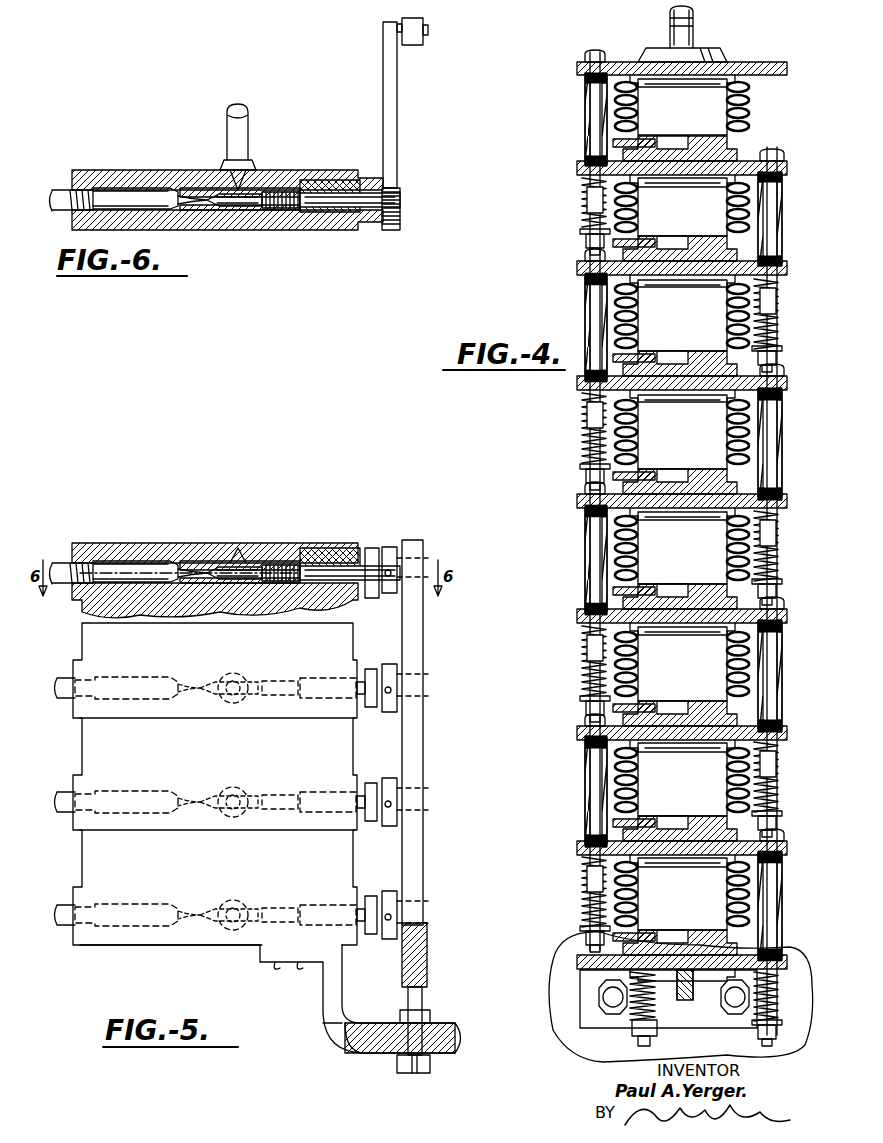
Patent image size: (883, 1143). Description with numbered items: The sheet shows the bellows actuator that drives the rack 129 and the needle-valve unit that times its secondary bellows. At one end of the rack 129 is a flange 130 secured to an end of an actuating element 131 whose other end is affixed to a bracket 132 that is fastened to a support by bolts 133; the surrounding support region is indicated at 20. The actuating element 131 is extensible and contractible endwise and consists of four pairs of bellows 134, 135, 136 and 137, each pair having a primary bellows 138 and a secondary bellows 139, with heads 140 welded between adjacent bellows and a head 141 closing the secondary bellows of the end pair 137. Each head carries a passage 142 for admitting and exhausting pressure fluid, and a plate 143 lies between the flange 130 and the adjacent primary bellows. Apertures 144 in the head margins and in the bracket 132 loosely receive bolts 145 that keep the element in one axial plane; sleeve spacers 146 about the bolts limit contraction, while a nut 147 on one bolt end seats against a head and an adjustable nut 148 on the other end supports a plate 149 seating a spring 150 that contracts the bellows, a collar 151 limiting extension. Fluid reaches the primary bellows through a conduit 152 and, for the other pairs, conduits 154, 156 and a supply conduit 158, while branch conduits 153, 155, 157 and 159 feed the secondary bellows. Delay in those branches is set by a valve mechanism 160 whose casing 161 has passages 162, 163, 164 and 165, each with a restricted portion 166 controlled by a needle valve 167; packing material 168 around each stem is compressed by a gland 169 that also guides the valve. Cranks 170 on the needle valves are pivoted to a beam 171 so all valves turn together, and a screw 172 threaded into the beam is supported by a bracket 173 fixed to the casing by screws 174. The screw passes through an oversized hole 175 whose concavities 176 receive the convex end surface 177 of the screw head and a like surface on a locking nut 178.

In FIG. 4, the base housing 20 is at (560, 1040).
In FIG. 4, the rack 129 is at (694, 22).
In FIG. 4, the flange 130 is at (650, 52).
In FIG. 4, the actuating element 131 is at (782, 415).
In FIG. 4, the bracket 132 is at (580, 1010).
In FIG. 4, the bolts 133 is at (612, 1000).
In FIG. 4, the pair of bellows 134 is at (577, 167).
In FIG. 4, the pair of bellows 135 is at (578, 385).
In FIG. 4, the pair of bellows 136 is at (578, 615).
In FIG. 4, the pair of bellows 137 is at (578, 848).
In FIG. 4, the primary bellows 138 is at (750, 110).
In FIG. 4, the secondary bellows 139 is at (745, 205).
In FIG. 4, the heads 140 is at (740, 150).
In FIG. 4, the head 141 is at (698, 930).
In FIG. 4, the passage 142 is at (685, 135).
In FIG. 4, the plate 143 is at (760, 62).
In FIG. 4, the apertures 144 is at (590, 70).
In FIG. 4, the bolts 145 is at (590, 100).
In FIG. 4, the spacers 146 is at (585, 130).
In FIG. 4, the nut 147 is at (590, 52).
In FIG. 4, the nut 148 is at (586, 243).
In FIG. 4, the plate 149 is at (580, 233).
In FIG. 4, the spring 150 is at (588, 200).
In FIG. 4, the collar 151 is at (583, 188).
In FIG. 4, the conduit 152 is at (613, 143).
In FIG. 6, the branch conduit 153 is at (240, 137).
In FIG. 5, the branch conduit 153 is at (250, 548).
In FIG. 4, the branch conduit 153 is at (600, 262).
In FIG. 5, the conduit 154 is at (245, 680).
In FIG. 4, the conduit 154 is at (613, 359).
In FIG. 5, the branch conduit 155 is at (62, 685).
In FIG. 4, the branch conduit 155 is at (613, 476).
In FIG. 5, the conduit 156 is at (245, 795).
In FIG. 4, the conduit 156 is at (613, 591).
In FIG. 5, the branch 157 is at (62, 798).
In FIG. 4, the branch 157 is at (613, 708).
In FIG. 5, the supply conduit 158 is at (245, 908).
In FIG. 4, the supply conduit 158 is at (613, 823).
In FIG. 5, the branch 159 is at (62, 910).
In FIG. 4, the branch 159 is at (613, 937).
In FIG. 6, the valve mechanism 160 is at (300, 170).
In FIG. 5, the valve mechanism 160 is at (228, 543).
In FIG. 6, the casing 161 is at (340, 178).
In FIG. 5, the casing 161 is at (345, 543).
In FIG. 6, the passage 162 is at (137, 200).
In FIG. 5, the passage 162 is at (118, 562).
In FIG. 5, the passage 163 is at (108, 677).
In FIG. 5, the passage 164 is at (120, 792).
In FIG. 5, the passage 165 is at (128, 905).
In FIG. 6, the restricted portion 166 is at (190, 198).
In FIG. 5, the restricted portion 166 is at (190, 570).
In FIG. 6, the needle valve 167 is at (250, 206).
In FIG. 5, the needle valve 167 is at (232, 567).
In FIG. 6, the packing material 168 is at (323, 222).
In FIG. 5, the packing material 168 is at (312, 548).
In FIG. 6, the gland 169 is at (373, 224).
In FIG. 5, the gland 169 is at (370, 548).
In FIG. 6, the cranks 170 is at (393, 118).
In FIG. 5, the cranks 170 is at (392, 547).
In FIG. 6, the beam 171 is at (420, 22).
In FIG. 5, the beam 171 is at (425, 755).
In FIG. 5, the screw 172 is at (427, 1000).
In FIG. 5, the bracket 173 is at (365, 1053).
In FIG. 5, the screws 174 is at (278, 965).
In FIG. 5, the hole 175 is at (455, 1038).
In FIG. 5, the concavities 176 is at (400, 1012).
In FIG. 5, the convex end surface 177 is at (400, 1040).
In FIG. 5, the nut 178 is at (430, 1015).